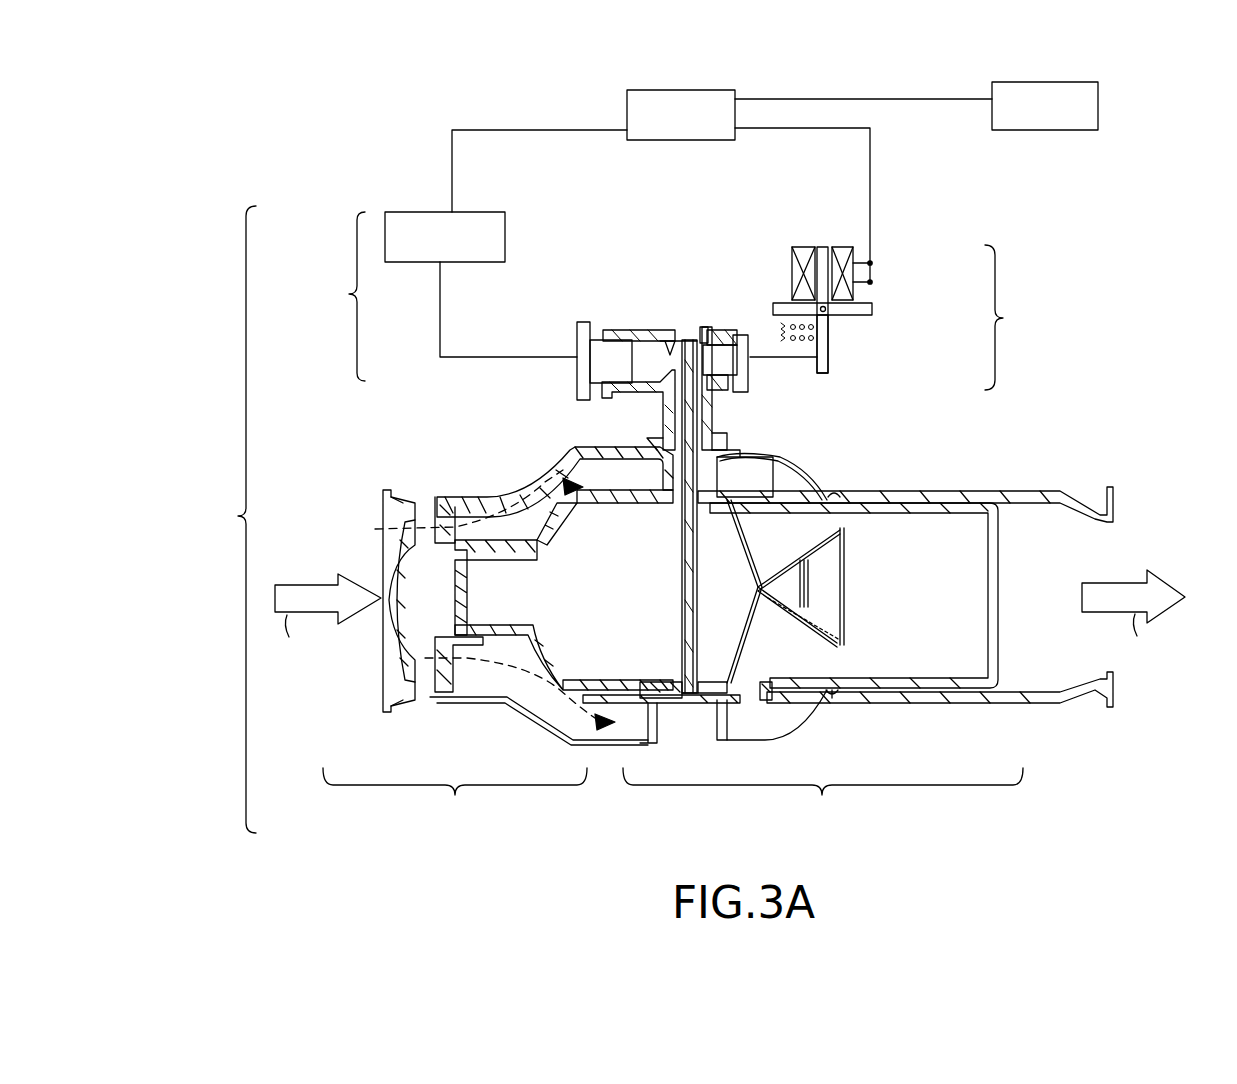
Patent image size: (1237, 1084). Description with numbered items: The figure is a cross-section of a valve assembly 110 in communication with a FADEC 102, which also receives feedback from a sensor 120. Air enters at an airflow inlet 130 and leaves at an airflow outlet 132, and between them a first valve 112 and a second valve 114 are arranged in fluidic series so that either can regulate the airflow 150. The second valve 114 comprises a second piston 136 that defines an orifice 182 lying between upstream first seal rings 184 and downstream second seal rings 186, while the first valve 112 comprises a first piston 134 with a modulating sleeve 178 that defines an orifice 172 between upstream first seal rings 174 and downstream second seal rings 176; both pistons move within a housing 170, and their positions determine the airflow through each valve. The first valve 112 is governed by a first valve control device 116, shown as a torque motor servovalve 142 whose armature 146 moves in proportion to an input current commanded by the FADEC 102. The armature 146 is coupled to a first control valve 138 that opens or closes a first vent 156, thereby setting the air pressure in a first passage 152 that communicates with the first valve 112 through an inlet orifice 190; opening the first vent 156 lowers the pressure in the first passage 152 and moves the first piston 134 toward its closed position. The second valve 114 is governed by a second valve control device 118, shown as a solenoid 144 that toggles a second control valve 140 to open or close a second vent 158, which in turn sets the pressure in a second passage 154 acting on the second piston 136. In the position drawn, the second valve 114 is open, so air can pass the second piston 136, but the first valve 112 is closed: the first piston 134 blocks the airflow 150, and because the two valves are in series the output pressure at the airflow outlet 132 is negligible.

The FADEC 102 is at (640, 143).
The sensor 120 is at (1003, 132).
The solenoid 144 is at (507, 239).
The second valve control device 118 is at (333, 296).
The valve assembly 110 is at (226, 519).
The first valve control device 116 is at (1015, 317).
The torque motor servovalve 142 is at (893, 275).
The armature 146 is at (830, 366).
The second control valve 140 is at (598, 345).
The second vent 158 is at (632, 330).
The first vent 156 is at (703, 327).
The first control valve 138 is at (718, 345).
The second passage 154 is at (678, 417).
The first passage 152 is at (700, 420).
The inlet orifice 190 is at (740, 472).
The second seal rings 176 is at (838, 497).
The housing 170 is at (1002, 489).
The first piston 134 is at (905, 515).
The airflow outlet 132 is at (1135, 541).
The orifice 172 is at (750, 677).
The first seal rings 174 is at (712, 683).
The modulating sleeve 178 is at (763, 697).
The second seal rings 186 is at (637, 690).
The airflow 150 is at (560, 488).
The airflow inlet 130 is at (383, 545).
The orifice 182 is at (547, 537).
The second piston 136 is at (513, 558).
The first seal rings 184 is at (480, 627).
The second valve 114 is at (455, 804).
The first valve 112 is at (823, 804).